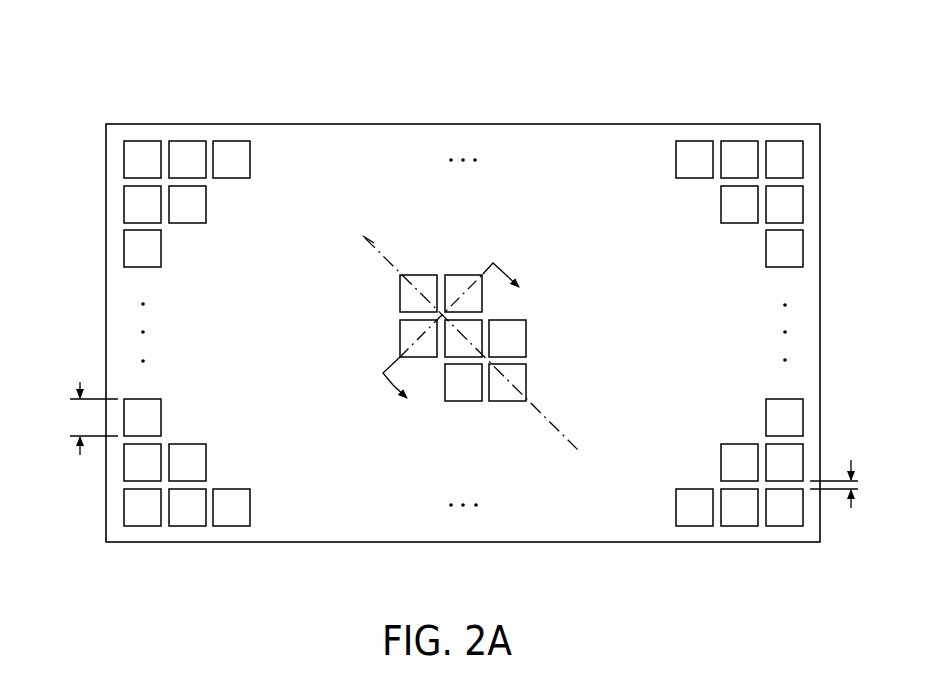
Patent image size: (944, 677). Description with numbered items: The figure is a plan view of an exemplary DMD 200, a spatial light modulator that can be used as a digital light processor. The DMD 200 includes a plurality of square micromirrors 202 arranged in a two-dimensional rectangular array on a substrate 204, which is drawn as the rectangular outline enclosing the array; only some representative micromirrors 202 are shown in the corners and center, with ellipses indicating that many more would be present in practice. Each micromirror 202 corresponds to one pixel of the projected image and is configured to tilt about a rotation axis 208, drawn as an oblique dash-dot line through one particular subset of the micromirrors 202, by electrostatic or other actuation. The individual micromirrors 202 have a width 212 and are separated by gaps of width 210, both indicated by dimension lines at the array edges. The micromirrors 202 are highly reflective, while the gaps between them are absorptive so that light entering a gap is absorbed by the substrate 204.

The DMD 200 is at (88, 90).
The micromirrors 202 is at (232, 141).
The substrate 204 is at (267, 542).
The rotation axis 208 is at (370, 241).
The gap width 210 is at (851, 484).
The micromirror width 212 is at (82, 418).